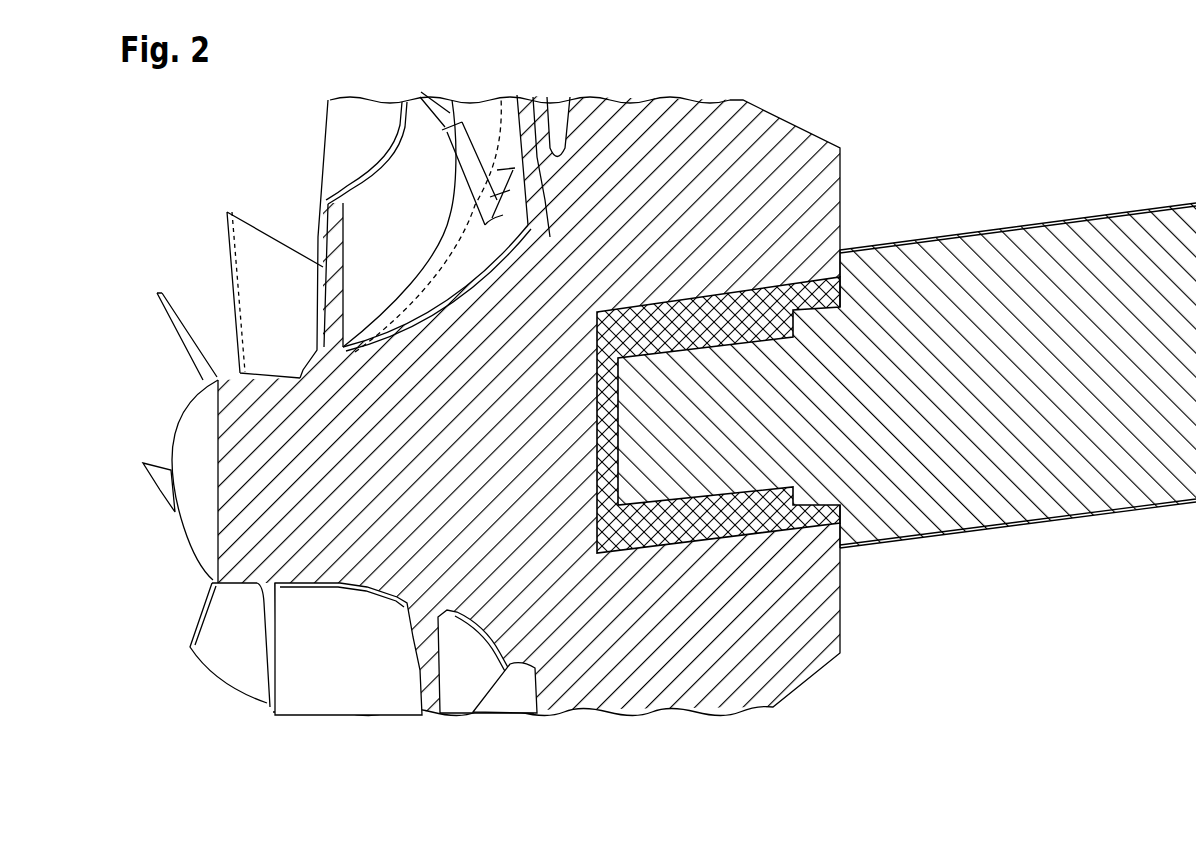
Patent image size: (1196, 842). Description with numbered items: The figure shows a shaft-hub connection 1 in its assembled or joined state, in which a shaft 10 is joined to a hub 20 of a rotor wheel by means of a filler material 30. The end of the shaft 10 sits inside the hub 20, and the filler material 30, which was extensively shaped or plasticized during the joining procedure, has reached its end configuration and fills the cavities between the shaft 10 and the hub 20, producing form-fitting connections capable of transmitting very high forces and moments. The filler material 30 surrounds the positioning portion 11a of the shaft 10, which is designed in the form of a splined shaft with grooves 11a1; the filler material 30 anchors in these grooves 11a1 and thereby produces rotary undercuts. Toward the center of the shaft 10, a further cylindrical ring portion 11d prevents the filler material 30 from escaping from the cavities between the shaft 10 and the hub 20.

The shaft-hub connection 1 is at (907, 620).
The shaft 10 is at (1045, 265).
The hub 20 is at (645, 150).
The filler material 30 is at (682, 527).
The positioning portion 11a is at (780, 307).
The grooves 11a1 is at (810, 180).
The cylindrical ring portion 11d is at (840, 250).